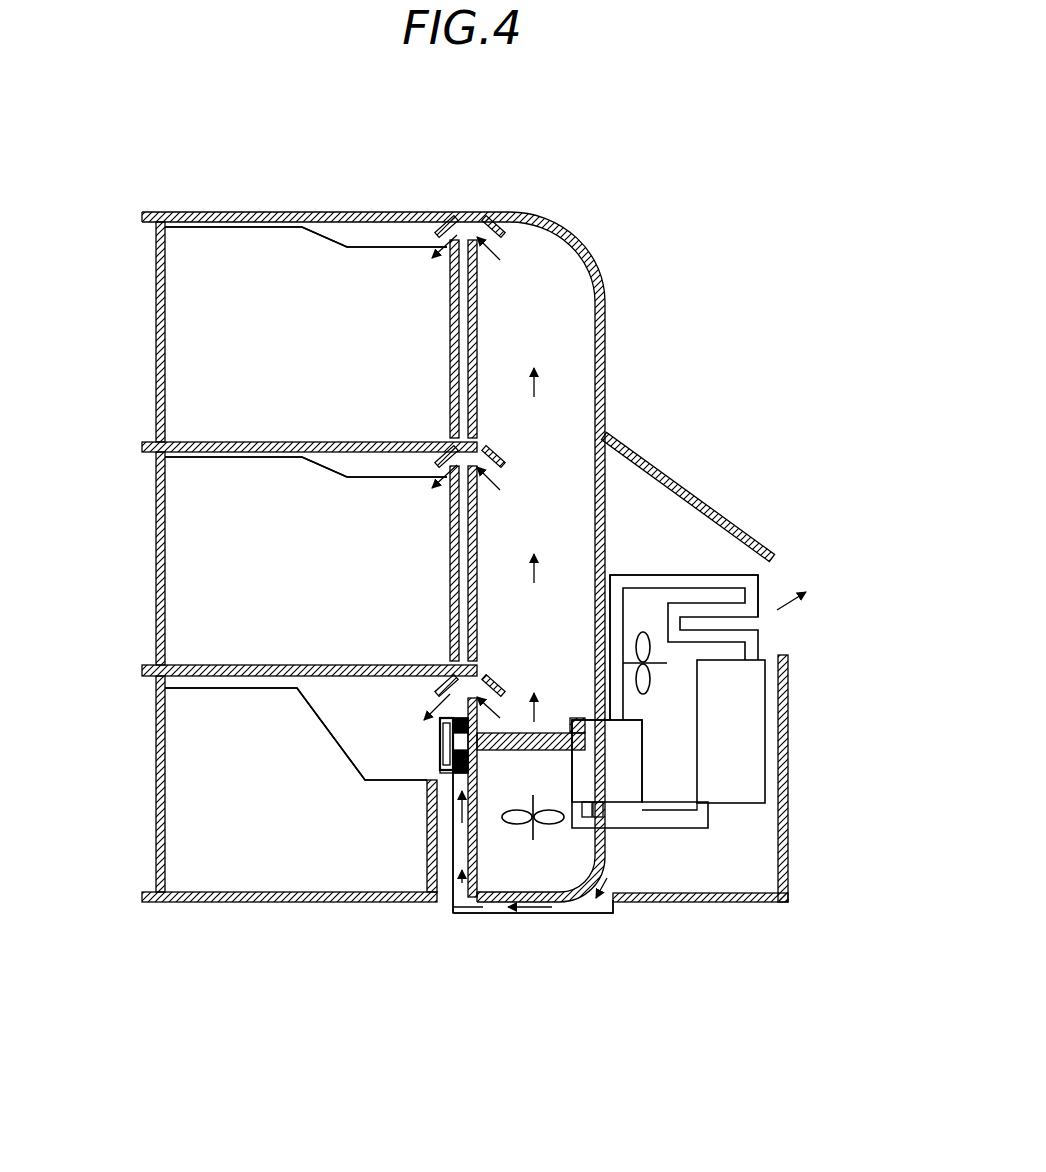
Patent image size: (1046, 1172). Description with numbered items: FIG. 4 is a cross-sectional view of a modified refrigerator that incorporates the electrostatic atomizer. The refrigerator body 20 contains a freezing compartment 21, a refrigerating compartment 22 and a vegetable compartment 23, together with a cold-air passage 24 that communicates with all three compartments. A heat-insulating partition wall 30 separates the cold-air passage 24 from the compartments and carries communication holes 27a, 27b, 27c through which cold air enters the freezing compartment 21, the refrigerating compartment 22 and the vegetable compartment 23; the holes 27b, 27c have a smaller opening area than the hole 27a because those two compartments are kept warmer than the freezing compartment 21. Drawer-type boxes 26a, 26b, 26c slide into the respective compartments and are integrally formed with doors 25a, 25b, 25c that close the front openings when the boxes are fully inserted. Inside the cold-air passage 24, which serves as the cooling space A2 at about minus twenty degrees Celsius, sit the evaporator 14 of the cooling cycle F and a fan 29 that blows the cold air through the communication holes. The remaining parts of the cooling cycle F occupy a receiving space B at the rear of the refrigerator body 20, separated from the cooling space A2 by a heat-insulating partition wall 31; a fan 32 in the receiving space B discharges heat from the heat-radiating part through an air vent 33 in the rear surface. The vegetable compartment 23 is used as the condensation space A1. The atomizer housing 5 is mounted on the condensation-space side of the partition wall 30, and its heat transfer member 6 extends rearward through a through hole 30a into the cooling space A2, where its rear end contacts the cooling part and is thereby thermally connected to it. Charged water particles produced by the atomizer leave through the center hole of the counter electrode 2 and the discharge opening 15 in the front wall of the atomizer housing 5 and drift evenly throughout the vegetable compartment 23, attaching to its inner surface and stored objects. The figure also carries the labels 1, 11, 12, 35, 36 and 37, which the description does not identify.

The damper device 1 is at (447, 770).
The counter electrode 2 is at (440, 770).
The atomizer housing 5 is at (460, 772).
The heat transfer member 6 is at (585, 728).
The compressor (refrigeration cycle 9) 11 is at (745, 738).
The condenser (refrigeration cycle 9) 12 is at (750, 573).
The evaporator 14 is at (610, 787).
The discharge opening 15 is at (440, 750).
The refrigerator body 20 is at (240, 212).
The freezing compartment 21 is at (205, 308).
The refrigerating compartment 22 is at (205, 535).
The vegetable compartment 23 is at (218, 757).
The cold-air passage 24 is at (553, 417).
The door 25a is at (157, 322).
The door 25b is at (157, 568).
The door 25c is at (157, 805).
The drawer-type box 26a is at (306, 228).
The drawer-type box 26b is at (326, 460).
The drawer-type box 26c is at (337, 742).
The communication hole 27a is at (470, 227).
The communication hole 27b is at (475, 443).
The communication hole 27c is at (475, 672).
The fan 29 is at (547, 830).
The partition wall 30 is at (493, 887).
The through hole 30a is at (732, 517).
The partition wall 31 is at (640, 600).
The fan 32 is at (645, 650).
The air vent 33 is at (772, 568).
The return duct 35 is at (587, 913).
The duct wall 36 is at (487, 915).
The partition wall 37 is at (453, 907).
The condensation space A1 is at (310, 830).
The cooling space A2 is at (575, 433).
The receiving space B is at (672, 517).
The cooling cycle F is at (725, 856).